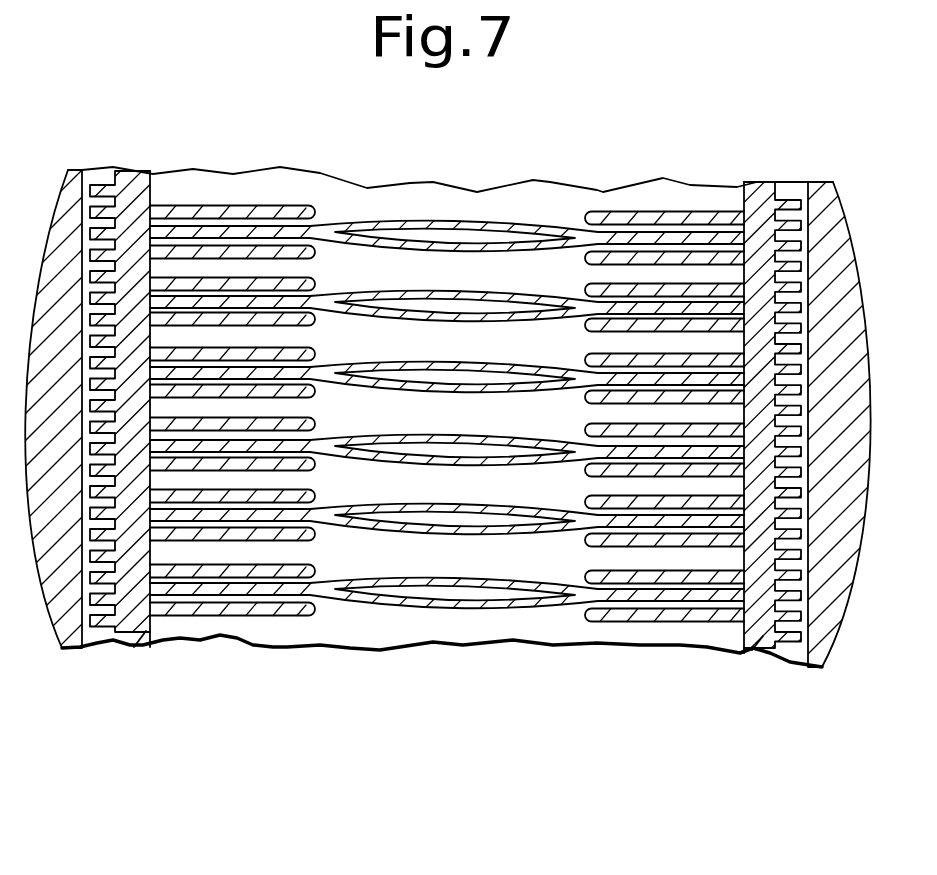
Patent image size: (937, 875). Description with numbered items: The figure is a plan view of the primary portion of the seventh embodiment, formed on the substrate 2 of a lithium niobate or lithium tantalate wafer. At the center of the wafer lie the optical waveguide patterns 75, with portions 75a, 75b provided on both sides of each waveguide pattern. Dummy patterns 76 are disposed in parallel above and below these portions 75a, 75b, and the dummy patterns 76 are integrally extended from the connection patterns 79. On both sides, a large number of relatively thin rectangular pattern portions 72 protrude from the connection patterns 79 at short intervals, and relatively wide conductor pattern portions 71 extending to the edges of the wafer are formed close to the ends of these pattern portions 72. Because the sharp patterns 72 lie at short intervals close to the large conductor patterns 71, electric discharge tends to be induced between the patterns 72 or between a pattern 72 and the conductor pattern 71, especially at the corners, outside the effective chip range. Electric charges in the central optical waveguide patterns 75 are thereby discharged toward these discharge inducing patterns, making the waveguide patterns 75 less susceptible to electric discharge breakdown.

The substrate 2 is at (403, 633).
The conductor pattern portion 71 is at (65, 652).
The rectangular pattern portion 72 is at (97, 642).
The optical waveguide pattern 75 is at (455, 436).
The portion of the optical waveguide pattern 75a is at (268, 588).
The portion of the optical waveguide pattern 75b is at (620, 597).
The dummy pattern 76 is at (197, 567).
The connection pattern 79 is at (134, 647).